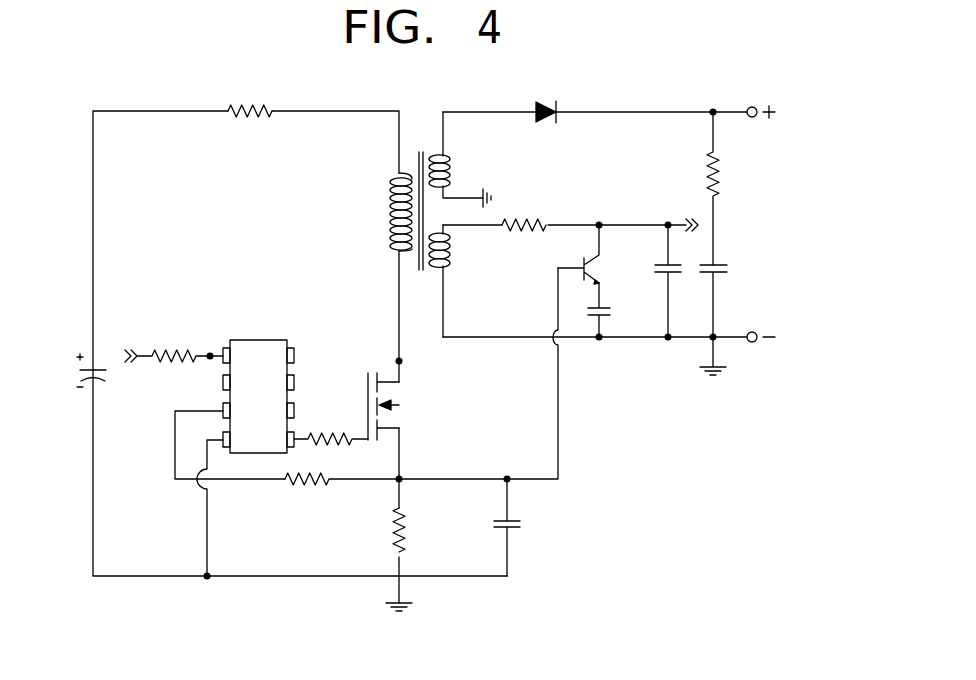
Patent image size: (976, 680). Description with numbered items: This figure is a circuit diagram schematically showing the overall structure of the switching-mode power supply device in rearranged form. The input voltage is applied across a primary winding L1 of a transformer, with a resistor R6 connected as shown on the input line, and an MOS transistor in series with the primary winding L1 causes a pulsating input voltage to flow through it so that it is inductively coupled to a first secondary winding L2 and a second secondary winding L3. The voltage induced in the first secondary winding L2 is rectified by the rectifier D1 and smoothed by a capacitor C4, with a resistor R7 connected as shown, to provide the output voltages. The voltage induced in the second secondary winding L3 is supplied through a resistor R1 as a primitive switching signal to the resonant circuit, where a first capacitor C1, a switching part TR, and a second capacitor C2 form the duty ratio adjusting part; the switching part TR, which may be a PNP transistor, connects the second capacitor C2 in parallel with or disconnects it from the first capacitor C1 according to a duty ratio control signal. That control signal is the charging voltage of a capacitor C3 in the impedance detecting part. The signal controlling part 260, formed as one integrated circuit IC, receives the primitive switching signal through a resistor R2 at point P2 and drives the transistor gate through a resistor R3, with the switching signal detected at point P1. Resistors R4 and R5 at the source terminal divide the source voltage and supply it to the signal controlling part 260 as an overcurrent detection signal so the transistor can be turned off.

The resistor R1 is at (524, 213).
The resistor R2 is at (174, 342).
The resistor R3 is at (331, 425).
The resistor R4 is at (342, 491).
The resistor R5 is at (385, 530).
The resistor R6 is at (250, 98).
The resistor R7 is at (698, 188).
The first capacitor C1 is at (655, 281).
The second capacitor C2 is at (608, 310).
The capacitor C3 is at (495, 527).
The capacitor C4 is at (728, 320).
The primary winding L1 is at (390, 212).
The first secondary winding L2 is at (460, 159).
The second secondary winding L3 is at (453, 281).
The rectifier D1 is at (548, 100).
The switching part TR is at (578, 254).
The integrated circuit IC is at (258, 396).
The signal controlling part 260 is at (270, 340).
The point P1 is at (388, 353).
The point P2 is at (207, 346).